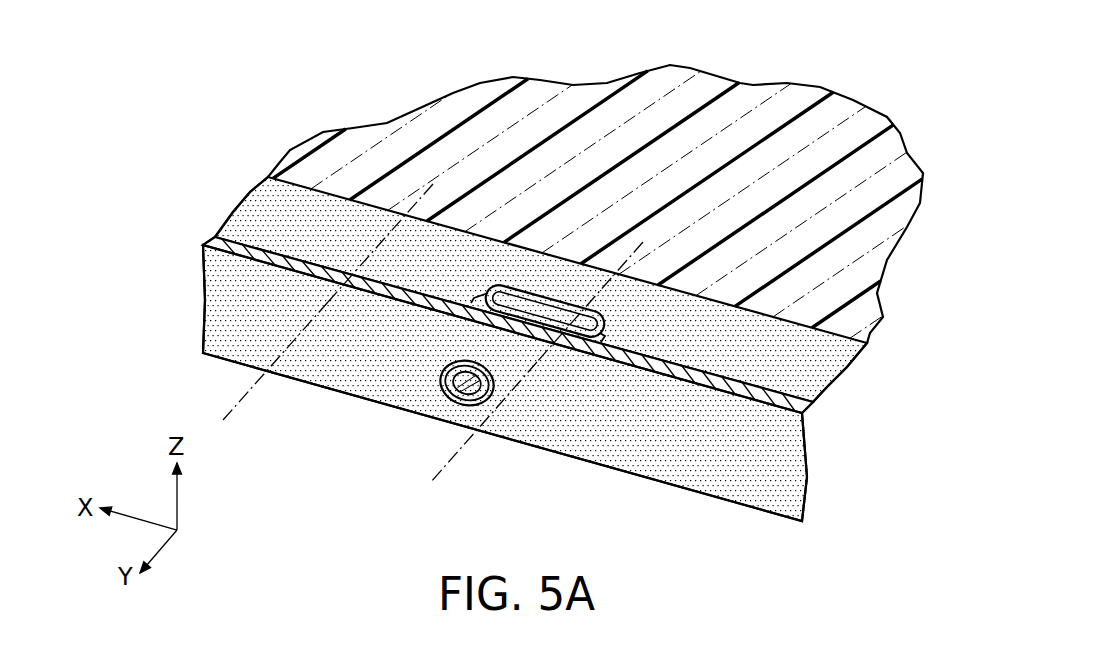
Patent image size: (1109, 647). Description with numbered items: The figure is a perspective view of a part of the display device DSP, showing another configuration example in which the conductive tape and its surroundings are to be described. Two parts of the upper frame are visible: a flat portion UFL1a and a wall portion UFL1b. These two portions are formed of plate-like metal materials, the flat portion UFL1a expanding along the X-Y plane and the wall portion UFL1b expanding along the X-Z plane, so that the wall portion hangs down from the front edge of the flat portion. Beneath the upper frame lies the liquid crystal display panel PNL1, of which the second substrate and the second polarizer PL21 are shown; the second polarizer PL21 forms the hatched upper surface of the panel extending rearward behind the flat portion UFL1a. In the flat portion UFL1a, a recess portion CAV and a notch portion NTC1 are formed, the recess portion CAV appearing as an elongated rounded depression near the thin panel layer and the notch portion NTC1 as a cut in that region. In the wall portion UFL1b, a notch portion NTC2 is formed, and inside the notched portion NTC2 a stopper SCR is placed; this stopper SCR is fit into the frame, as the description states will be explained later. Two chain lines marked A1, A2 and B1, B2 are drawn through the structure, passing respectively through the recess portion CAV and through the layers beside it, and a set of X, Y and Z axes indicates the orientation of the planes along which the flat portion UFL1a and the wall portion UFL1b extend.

The display device DSP is at (885, 67).
The flat portion UFL1a is at (262, 220).
The second polarizer PL21 is at (867, 267).
The liquid crystal display panel PNL1 is at (805, 408).
The wall portion UFL1b is at (713, 480).
The notch portion NTC1 is at (480, 285).
The recess portion CAV is at (550, 282).
The axis end A1 is at (473, 437).
The axis end A2 is at (601, 288).
The axis end B1 is at (265, 377).
The axis end B2 is at (391, 227).
The notch portion NTC2 is at (430, 380).
The stopper SCR is at (450, 392).